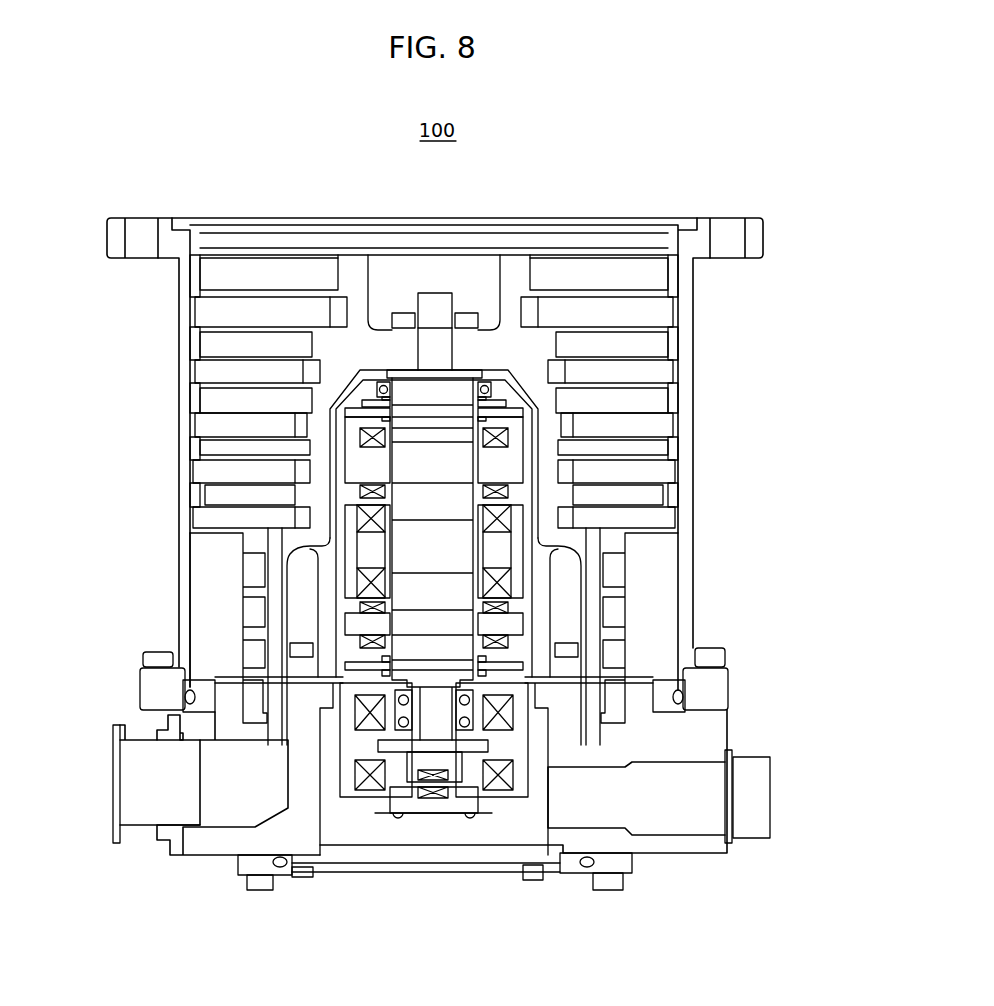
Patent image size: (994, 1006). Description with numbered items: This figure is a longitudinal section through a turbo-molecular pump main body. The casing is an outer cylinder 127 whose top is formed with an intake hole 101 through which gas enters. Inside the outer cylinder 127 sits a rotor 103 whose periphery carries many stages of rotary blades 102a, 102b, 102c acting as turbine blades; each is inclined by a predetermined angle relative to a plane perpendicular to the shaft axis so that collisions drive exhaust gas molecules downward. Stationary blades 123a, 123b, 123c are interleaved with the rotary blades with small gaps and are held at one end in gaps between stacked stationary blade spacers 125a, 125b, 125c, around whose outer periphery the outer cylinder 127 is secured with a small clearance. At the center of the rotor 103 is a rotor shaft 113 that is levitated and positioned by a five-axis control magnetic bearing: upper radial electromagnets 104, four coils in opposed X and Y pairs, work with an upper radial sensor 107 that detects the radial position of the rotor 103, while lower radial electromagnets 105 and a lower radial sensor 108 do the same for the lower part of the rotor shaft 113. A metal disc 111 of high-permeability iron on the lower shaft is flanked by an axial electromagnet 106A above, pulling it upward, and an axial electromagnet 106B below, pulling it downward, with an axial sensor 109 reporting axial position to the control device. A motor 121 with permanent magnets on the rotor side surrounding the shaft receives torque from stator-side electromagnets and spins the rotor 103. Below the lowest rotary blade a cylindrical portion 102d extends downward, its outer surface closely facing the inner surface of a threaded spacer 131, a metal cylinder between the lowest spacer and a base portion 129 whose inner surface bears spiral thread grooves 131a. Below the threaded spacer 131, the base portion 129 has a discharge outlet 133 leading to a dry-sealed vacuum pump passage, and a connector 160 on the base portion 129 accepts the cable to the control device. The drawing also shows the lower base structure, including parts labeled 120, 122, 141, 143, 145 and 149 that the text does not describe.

The intake hole 101 is at (478, 218).
The rotor 103 is at (388, 292).
The upper radial electromagnets 104 is at (465, 425).
The lower radial electromagnets 105 is at (523, 622).
The axial electromagnet 106A is at (513, 713).
The axial electromagnet 106B is at (513, 777).
The upper radial sensor 107 is at (637, 397).
The lower radial sensor 108 is at (600, 658).
The axial sensor 109 is at (433, 800).
The metal disc 111 is at (390, 745).
The rotor shaft 113 is at (517, 402).
The disc 120 is at (345, 680).
The motor 121 is at (603, 547).
The cylindrical stator 122 is at (537, 575).
The stationary blade 123a is at (212, 310).
The stationary blade 123b is at (212, 367).
The stationary blade 123c is at (212, 425).
The rotary blade 102a is at (212, 277).
The rotary blade 102b is at (212, 340).
The rotary blade 102c is at (212, 400).
The cylindrical portion 102d is at (280, 602).
The stationary blade spacer 125a is at (193, 267).
The stationary blade spacer 125b is at (193, 333).
The stationary blade spacer 125c is at (193, 400).
The outer cylinder 127 is at (685, 343).
The base portion 129 is at (706, 855).
The threaded spacer 131 is at (210, 633).
The spiral thread groove 131a is at (255, 568).
The discharge outlet 133 is at (140, 813).
The base plate 141 is at (397, 838).
The support 143 is at (487, 817).
The leg 145 is at (330, 877).
The seal 149 is at (587, 865).
The connector 160 is at (757, 845).